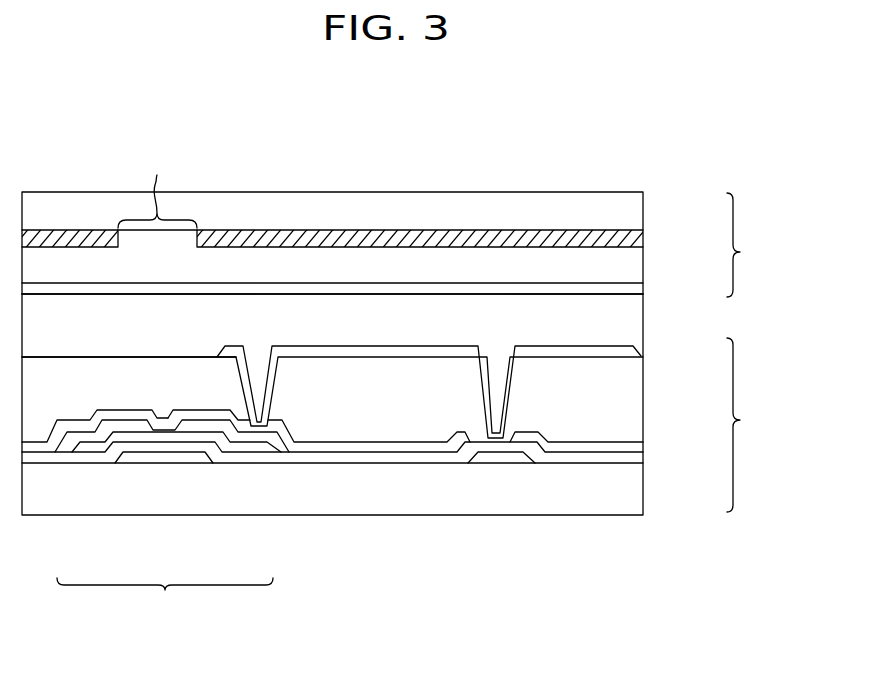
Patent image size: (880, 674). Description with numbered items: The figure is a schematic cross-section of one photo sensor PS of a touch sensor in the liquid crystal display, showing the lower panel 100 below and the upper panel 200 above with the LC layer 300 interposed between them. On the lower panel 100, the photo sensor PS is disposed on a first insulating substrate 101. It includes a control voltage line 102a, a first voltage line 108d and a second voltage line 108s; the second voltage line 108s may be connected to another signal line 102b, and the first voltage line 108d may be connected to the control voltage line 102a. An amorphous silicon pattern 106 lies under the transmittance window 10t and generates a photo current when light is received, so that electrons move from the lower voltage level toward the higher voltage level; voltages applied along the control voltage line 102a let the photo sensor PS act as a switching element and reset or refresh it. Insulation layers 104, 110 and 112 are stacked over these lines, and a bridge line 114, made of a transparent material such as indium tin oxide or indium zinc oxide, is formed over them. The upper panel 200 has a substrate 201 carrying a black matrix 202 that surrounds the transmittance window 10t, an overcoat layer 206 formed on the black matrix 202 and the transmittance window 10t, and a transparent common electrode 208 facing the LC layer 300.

The transmittance window 10t is at (157, 187).
The upper panel 200 is at (754, 245).
The upper base substrate 201 is at (633, 207).
The black matrix 202 is at (633, 239).
The overcoat layer 206 is at (633, 263).
The common electrode 208 is at (633, 290).
The LC layer 300 is at (633, 316).
The lower panel 100 is at (754, 425).
The bridge line 114 is at (636, 350).
The insulation layer 112 is at (630, 390).
The insulation layer 110 is at (636, 441).
The insulation layer 104 is at (636, 456).
The first insulating substrate 101 is at (636, 494).
The photo sensor PS is at (165, 599).
The control voltage line 102a is at (183, 457).
The amorphous silicon pattern 106 is at (142, 435).
The first voltage line 108d is at (82, 437).
The second voltage line 108s is at (246, 437).
The signal line 102b is at (504, 457).